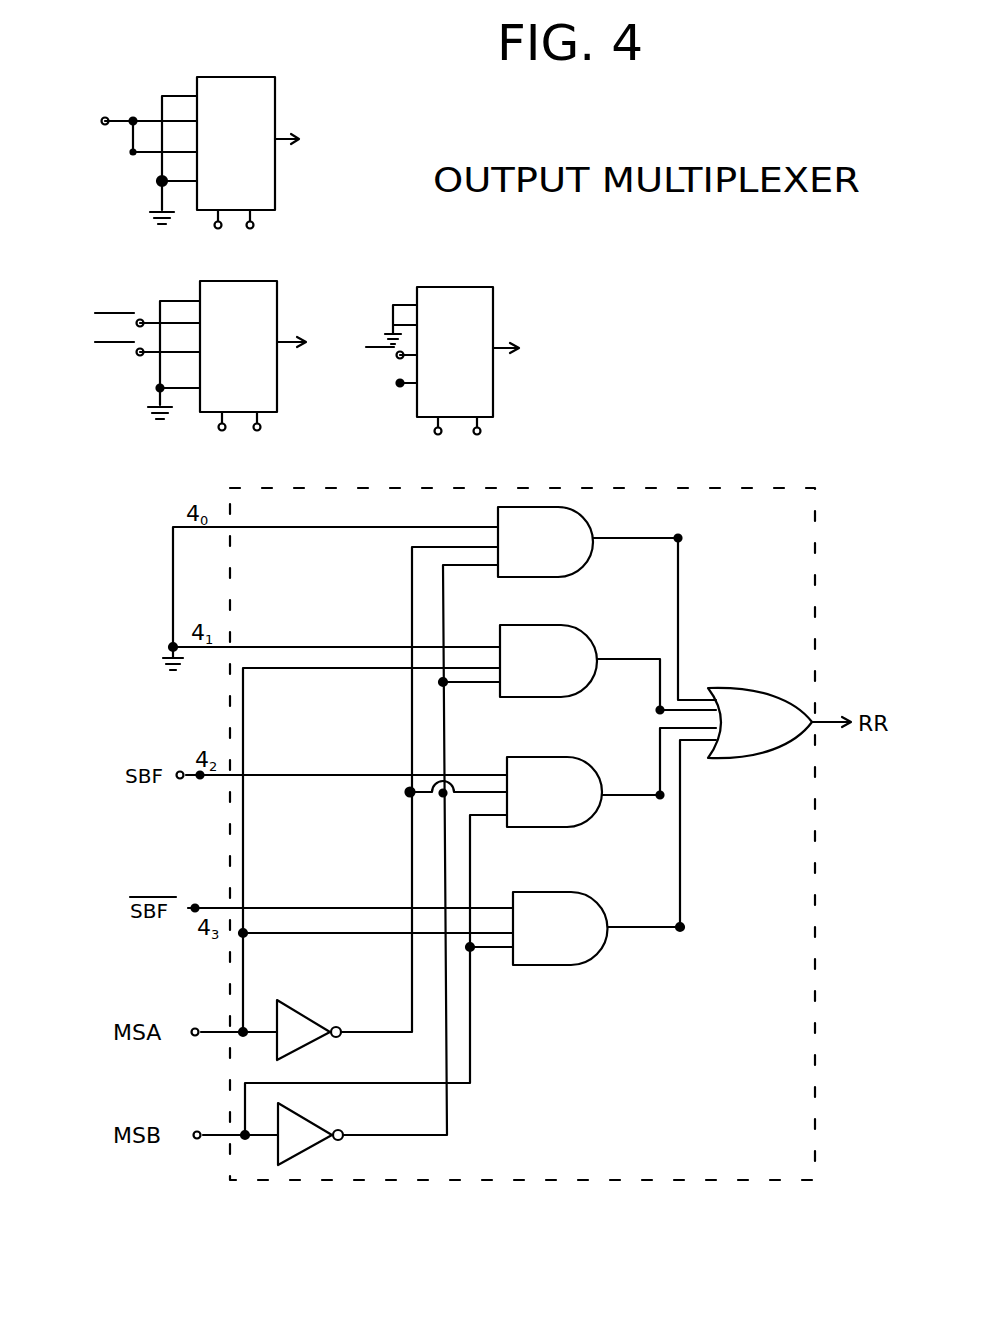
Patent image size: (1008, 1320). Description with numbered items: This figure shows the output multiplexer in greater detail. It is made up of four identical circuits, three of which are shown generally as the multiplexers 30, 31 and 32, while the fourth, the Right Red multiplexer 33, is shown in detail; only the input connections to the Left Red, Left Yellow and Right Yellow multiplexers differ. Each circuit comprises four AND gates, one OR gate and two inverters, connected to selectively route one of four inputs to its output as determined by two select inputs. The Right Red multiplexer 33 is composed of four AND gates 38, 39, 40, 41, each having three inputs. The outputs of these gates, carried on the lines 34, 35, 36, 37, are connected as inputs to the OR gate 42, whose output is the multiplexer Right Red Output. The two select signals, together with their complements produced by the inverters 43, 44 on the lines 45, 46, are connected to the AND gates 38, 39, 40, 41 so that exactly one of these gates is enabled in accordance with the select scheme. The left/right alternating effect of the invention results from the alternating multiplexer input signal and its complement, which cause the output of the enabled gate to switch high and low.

The first output multiplexer (LY) 30 is at (261, 75).
The second output multiplexer (RY) 31 is at (280, 294).
The third output multiplexer (LR) 32 is at (478, 283).
The RR output logic block 33 is at (594, 477).
The output line of AND gate 38 34 is at (661, 541).
The output line of AND gate 39 35 is at (656, 675).
The output line of AND gate 40 36 is at (651, 805).
The output line of AND gate 41 37 is at (668, 935).
The AND gate 38 is at (578, 509).
The AND gate 39 is at (568, 623).
The AND gate 40 is at (560, 752).
The AND gate 41 is at (560, 888).
The OR gate 42 is at (778, 693).
The inverter 43 is at (310, 1008).
The inverter 44 is at (318, 1122).
The inverted MSA line 45 is at (411, 960).
The inverted MSB line 46 is at (437, 1116).